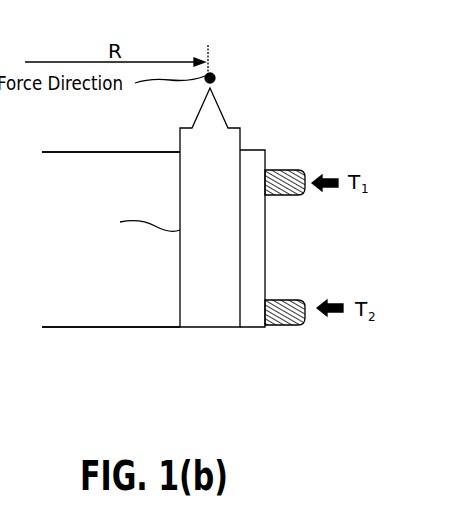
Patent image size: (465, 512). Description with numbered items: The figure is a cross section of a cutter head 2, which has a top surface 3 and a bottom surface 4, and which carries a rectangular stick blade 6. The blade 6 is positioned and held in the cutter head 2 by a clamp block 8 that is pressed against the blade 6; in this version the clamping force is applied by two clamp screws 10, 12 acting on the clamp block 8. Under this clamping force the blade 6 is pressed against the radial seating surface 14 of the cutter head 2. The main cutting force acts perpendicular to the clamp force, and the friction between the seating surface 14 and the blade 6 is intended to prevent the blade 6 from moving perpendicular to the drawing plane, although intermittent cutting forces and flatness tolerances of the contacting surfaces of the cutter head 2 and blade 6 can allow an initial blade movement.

The cutter head 2 is at (128, 313).
The top surface 3 is at (98, 152).
The bottom surface 4 is at (70, 327).
The stick blade 6 is at (207, 313).
The clamp block 8 is at (253, 248).
The clamp screw 10 is at (285, 170).
The clamp screw 12 is at (285, 325).
The radial seating surface 14 is at (120, 222).